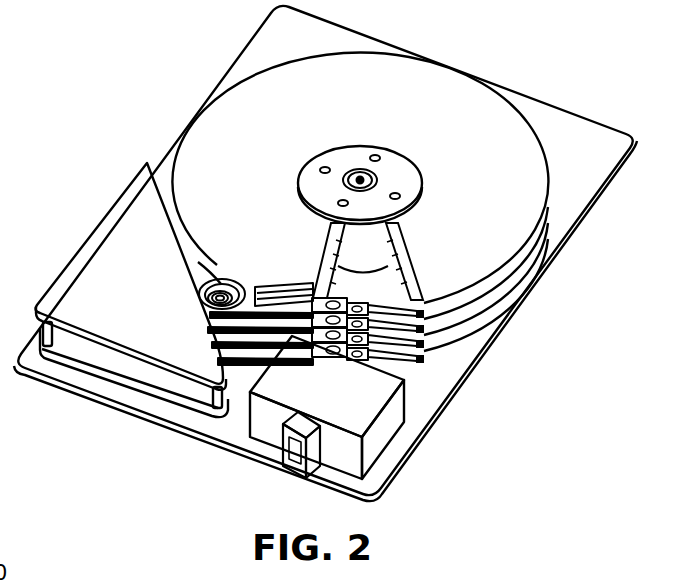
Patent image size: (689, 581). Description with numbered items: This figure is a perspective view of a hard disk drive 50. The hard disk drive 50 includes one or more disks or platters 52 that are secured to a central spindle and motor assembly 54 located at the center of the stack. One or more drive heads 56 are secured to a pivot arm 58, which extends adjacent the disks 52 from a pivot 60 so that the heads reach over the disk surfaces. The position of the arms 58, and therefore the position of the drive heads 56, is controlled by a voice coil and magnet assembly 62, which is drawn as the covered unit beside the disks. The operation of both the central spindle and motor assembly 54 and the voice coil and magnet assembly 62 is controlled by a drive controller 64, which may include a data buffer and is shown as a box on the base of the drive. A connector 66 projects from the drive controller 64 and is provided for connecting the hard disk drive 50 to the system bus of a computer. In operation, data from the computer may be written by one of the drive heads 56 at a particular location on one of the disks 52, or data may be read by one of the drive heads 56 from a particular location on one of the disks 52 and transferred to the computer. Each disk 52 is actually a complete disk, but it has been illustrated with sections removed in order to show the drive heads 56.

The hard disk drive 50 is at (104, 58).
The disks or platters 52 is at (506, 330).
The central spindle and motor assembly 54 is at (360, 180).
The drive heads 56 is at (432, 347).
The pivot arm 58 is at (314, 298).
The pivot 60 is at (222, 292).
The voice coil and magnet assembly 62 is at (112, 299).
The drive controller 64 is at (338, 399).
The connector 66 is at (286, 449).